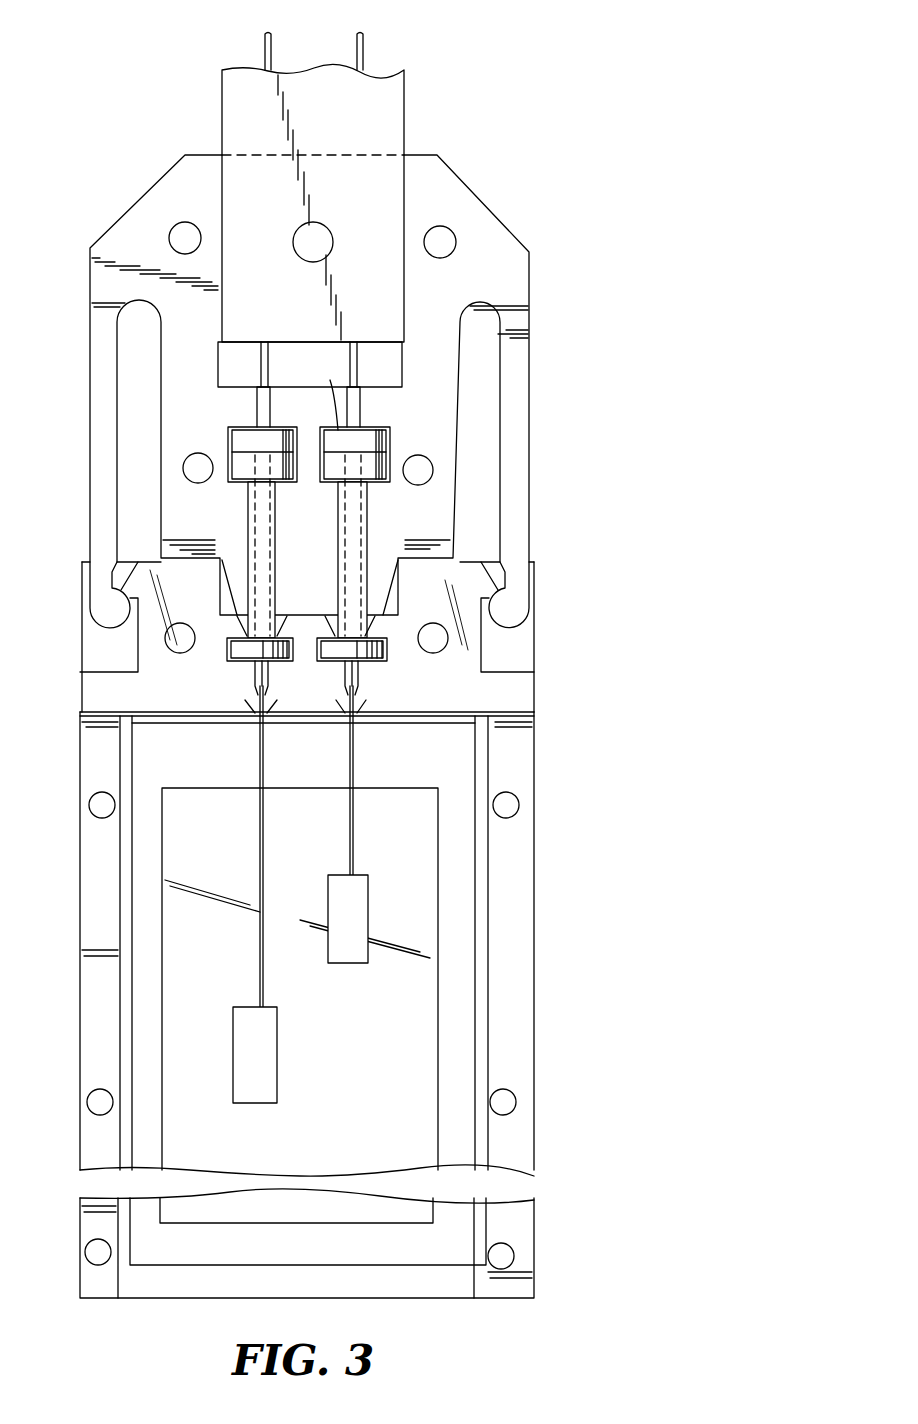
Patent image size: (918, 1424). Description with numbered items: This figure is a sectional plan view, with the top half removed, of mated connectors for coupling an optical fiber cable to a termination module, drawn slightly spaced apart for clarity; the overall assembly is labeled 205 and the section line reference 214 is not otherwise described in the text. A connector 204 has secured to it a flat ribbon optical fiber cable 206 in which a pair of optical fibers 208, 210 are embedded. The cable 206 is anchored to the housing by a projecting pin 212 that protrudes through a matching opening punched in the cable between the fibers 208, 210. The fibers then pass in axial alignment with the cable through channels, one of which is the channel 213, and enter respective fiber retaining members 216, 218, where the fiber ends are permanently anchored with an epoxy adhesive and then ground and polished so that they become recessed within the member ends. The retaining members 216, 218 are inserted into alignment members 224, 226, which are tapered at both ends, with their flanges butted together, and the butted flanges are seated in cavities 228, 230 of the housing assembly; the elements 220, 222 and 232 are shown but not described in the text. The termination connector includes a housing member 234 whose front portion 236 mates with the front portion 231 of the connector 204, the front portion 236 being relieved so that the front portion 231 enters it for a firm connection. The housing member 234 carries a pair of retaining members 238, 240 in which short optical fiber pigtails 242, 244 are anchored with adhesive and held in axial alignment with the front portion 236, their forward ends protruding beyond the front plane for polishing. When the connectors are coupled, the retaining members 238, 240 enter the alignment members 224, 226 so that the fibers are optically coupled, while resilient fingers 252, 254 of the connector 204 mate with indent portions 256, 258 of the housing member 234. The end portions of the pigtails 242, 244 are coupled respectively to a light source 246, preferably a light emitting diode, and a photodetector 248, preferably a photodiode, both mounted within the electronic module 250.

The connector 204 is at (465, 186).
The sensor assembly 205 is at (580, 203).
The flat ribbon optical fiber cable 206 is at (398, 104).
The optical fiber 208 is at (272, 38).
The optical fiber 210 is at (364, 49).
The projecting pin 212 is at (312, 226).
The channel 213 is at (362, 409).
The pin 214 is at (258, 412).
The fiber retaining member 216 is at (390, 438).
The fiber retaining member 218 is at (238, 438).
The shaft 220 is at (338, 554).
The shaft 222 is at (278, 553).
The alignment member 224 is at (388, 478).
The alignment member 226 is at (230, 472).
The cavity 228 is at (338, 428).
The cavity 230 is at (283, 427).
The front portion 231 is at (303, 613).
The intermediate plate 232 is at (473, 567).
The housing member 234 is at (532, 772).
The front portion 236 is at (320, 618).
The retaining member 238 is at (381, 662).
The retaining member 240 is at (238, 659).
The optical fiber pigtail 242 is at (354, 760).
The optical fiber pigtail 244 is at (256, 760).
The light source 246 is at (274, 1089).
The photodetector 248 is at (352, 963).
The electronic module 250 is at (425, 1050).
The resilient finger 252 is at (524, 501).
The resilient finger 254 is at (91, 509).
The indent portion 256 is at (528, 641).
The indent portion 258 is at (137, 640).